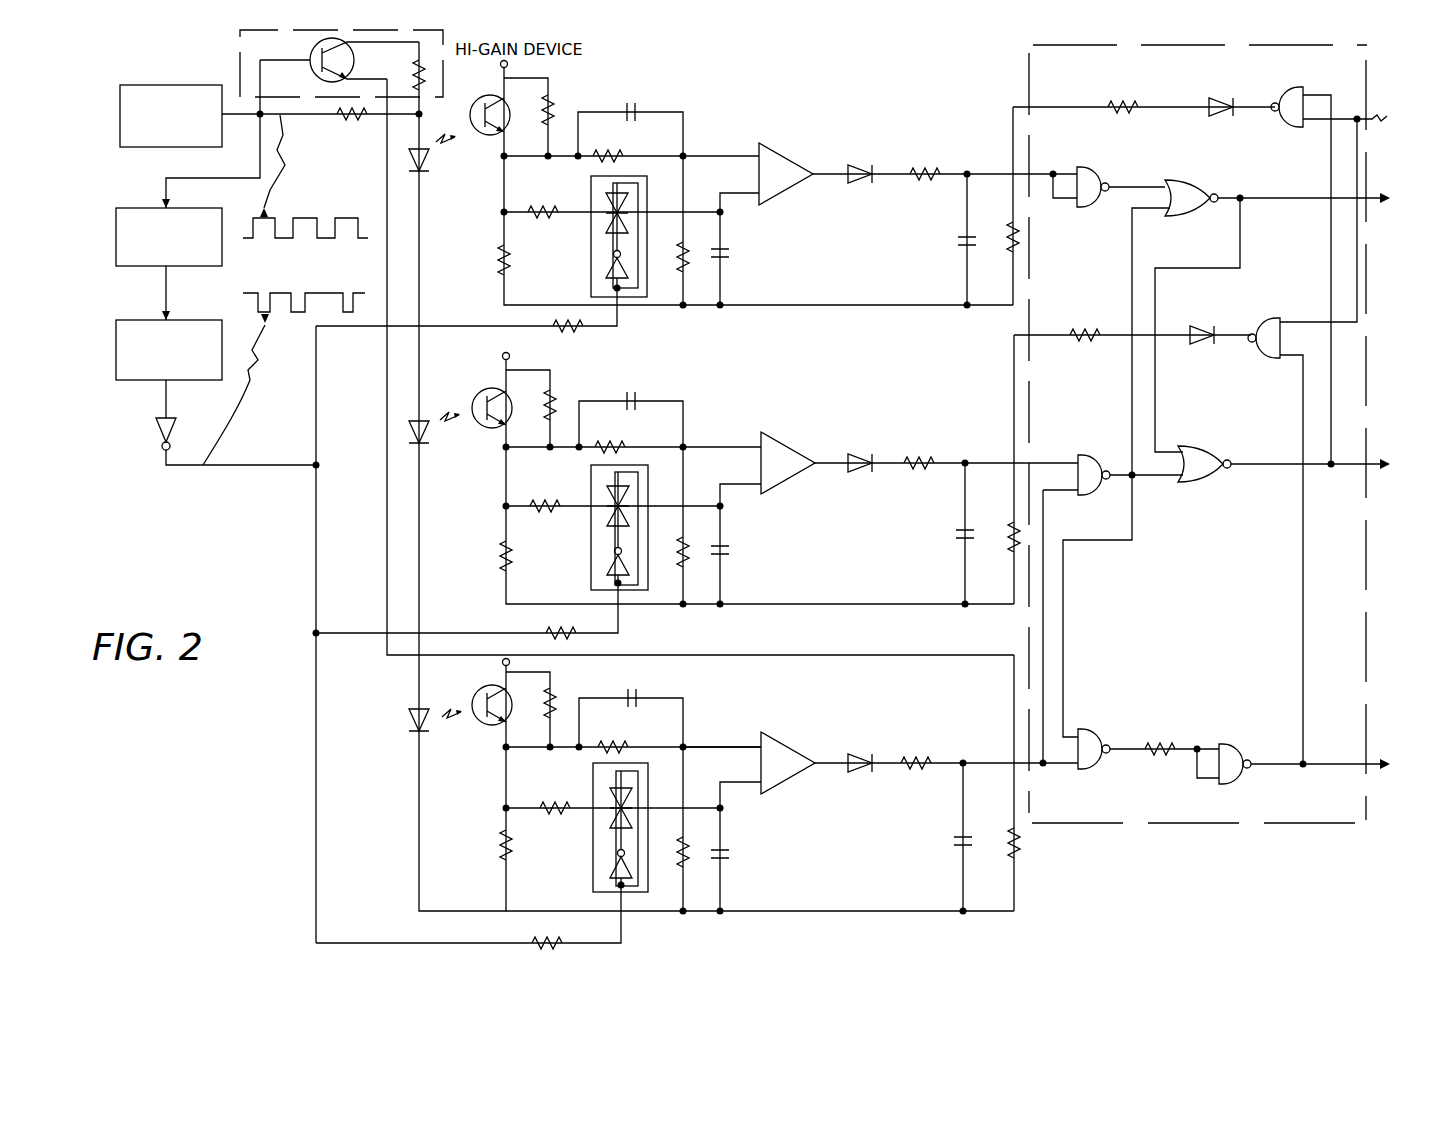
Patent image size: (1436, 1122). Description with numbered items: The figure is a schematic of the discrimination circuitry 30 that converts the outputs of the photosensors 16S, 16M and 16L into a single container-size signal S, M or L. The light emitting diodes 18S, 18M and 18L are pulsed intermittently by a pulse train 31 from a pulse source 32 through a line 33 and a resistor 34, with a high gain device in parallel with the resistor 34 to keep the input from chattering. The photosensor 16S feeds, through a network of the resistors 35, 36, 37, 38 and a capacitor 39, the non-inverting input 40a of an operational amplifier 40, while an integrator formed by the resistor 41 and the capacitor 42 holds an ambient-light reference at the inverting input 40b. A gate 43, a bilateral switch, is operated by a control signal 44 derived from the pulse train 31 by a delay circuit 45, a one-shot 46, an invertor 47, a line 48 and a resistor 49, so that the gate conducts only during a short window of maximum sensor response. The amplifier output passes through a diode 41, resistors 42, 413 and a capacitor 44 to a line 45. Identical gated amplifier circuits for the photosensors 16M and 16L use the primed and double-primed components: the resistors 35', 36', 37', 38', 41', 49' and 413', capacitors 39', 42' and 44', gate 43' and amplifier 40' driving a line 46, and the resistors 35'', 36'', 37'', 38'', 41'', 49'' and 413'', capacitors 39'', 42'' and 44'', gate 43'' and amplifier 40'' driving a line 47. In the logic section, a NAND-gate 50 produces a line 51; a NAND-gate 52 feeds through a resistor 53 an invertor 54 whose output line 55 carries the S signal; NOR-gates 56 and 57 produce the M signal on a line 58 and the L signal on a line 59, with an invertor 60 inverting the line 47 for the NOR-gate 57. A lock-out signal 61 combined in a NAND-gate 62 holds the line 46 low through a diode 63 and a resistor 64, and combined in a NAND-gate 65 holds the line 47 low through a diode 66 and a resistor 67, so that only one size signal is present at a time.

The photosensor 16L is at (478, 100).
The photosensor 16M is at (480, 390).
The photosensor 16S is at (480, 695).
The light emitting diode 18L is at (426, 166).
The light emitting diode 18M is at (427, 443).
The light emitting diode 18S is at (427, 732).
The discrimination circuitry 30 is at (1192, 832).
The pulse train 31 is at (286, 230).
The pulse source 32 is at (118, 124).
The line 33 is at (310, 118).
The resistor 34 is at (350, 120).
The resistor 35 is at (532, 862).
The resistor 35' is at (532, 558).
The resistor 35'' is at (530, 264).
The resistor 36 is at (550, 705).
The resistor 36' is at (553, 407).
The resistor 36'' is at (554, 114).
The resistor 37 is at (630, 734).
The resistor 37' is at (632, 433).
The resistor 37'' is at (632, 144).
The resistor 38 is at (696, 829).
The resistor 38' is at (698, 525).
The resistor 38'' is at (701, 230).
The capacitor 39 is at (631, 705).
The capacitor 39' is at (631, 405).
The capacitor 39'' is at (630, 113).
The operational amplifier 40 is at (788, 752).
The operational amplifier 40' is at (789, 475).
The operational amplifier 40'' is at (795, 182).
The non-inverting input 40a is at (724, 745).
The inverting input 40b is at (748, 797).
The resistor and diode 41 is at (690, 762).
The resistor and diode 41' is at (690, 477).
The resistor and diode 41'' is at (692, 191).
The capacitor and resistor 42 is at (821, 811).
The capacitor and resistor 42' is at (823, 507).
The capacitor and resistor 42'' is at (829, 215).
The gate 43 is at (593, 827).
The gate 43' is at (590, 525).
The gate 43'' is at (588, 236).
The gate control signal and capacitor 44 is at (587, 600).
The capacitor 44' is at (935, 533).
The capacitor 44'' is at (938, 239).
The delay circuit and line 45 is at (116, 237).
The one-shot and line 46 is at (116, 358).
The invertor and line 47 is at (156, 432).
The line 48 is at (316, 524).
The resistor 49 is at (468, 931).
The resistor 49' is at (490, 616).
The resistor 49'' is at (469, 321).
The NAND-gate 50 is at (1090, 455).
The line 51 is at (1063, 680).
The NAND-gate 52 is at (1092, 729).
The resistor 53 is at (1160, 740).
The invertor 54 is at (1233, 742).
The line 55 is at (1266, 770).
The NOR-gate 56 is at (1195, 450).
The NOR-gate 57 is at (1180, 180).
The line 58 is at (1318, 470).
The line 59 is at (1300, 197).
The invertor 60 is at (1090, 167).
The lock-out line 61 is at (1338, 112).
The NAND-gate 62 is at (1270, 318).
The diode 63 is at (1198, 328).
The resistor 64 is at (1083, 330).
The NAND-gate 65 is at (1290, 88).
The diode 66 is at (1220, 99).
The resistor 67 is at (1119, 104).
The resistor 413 is at (1043, 847).
The resistor 413' is at (996, 518).
The resistor 413'' is at (1050, 239).